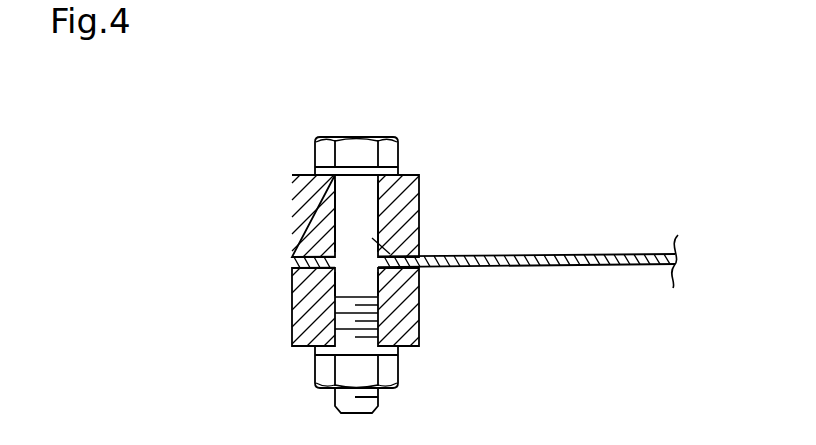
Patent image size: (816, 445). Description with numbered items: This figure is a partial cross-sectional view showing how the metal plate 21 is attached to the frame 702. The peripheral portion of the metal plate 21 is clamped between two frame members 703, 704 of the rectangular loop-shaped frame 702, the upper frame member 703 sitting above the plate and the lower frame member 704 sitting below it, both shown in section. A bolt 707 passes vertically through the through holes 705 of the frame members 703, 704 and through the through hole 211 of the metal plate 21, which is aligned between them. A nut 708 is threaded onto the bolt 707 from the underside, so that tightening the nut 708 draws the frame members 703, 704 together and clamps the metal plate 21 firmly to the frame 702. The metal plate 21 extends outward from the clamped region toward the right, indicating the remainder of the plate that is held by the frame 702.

The metal plate 21 is at (626, 252).
The through hole of the metal plate 211 is at (392, 248).
The frame 702 is at (360, 259).
The frame member 703 is at (292, 231).
The frame member 704 is at (292, 303).
The through hole of the frame member 705 is at (336, 206).
The bolt 707 is at (399, 149).
The nut 708 is at (399, 370).